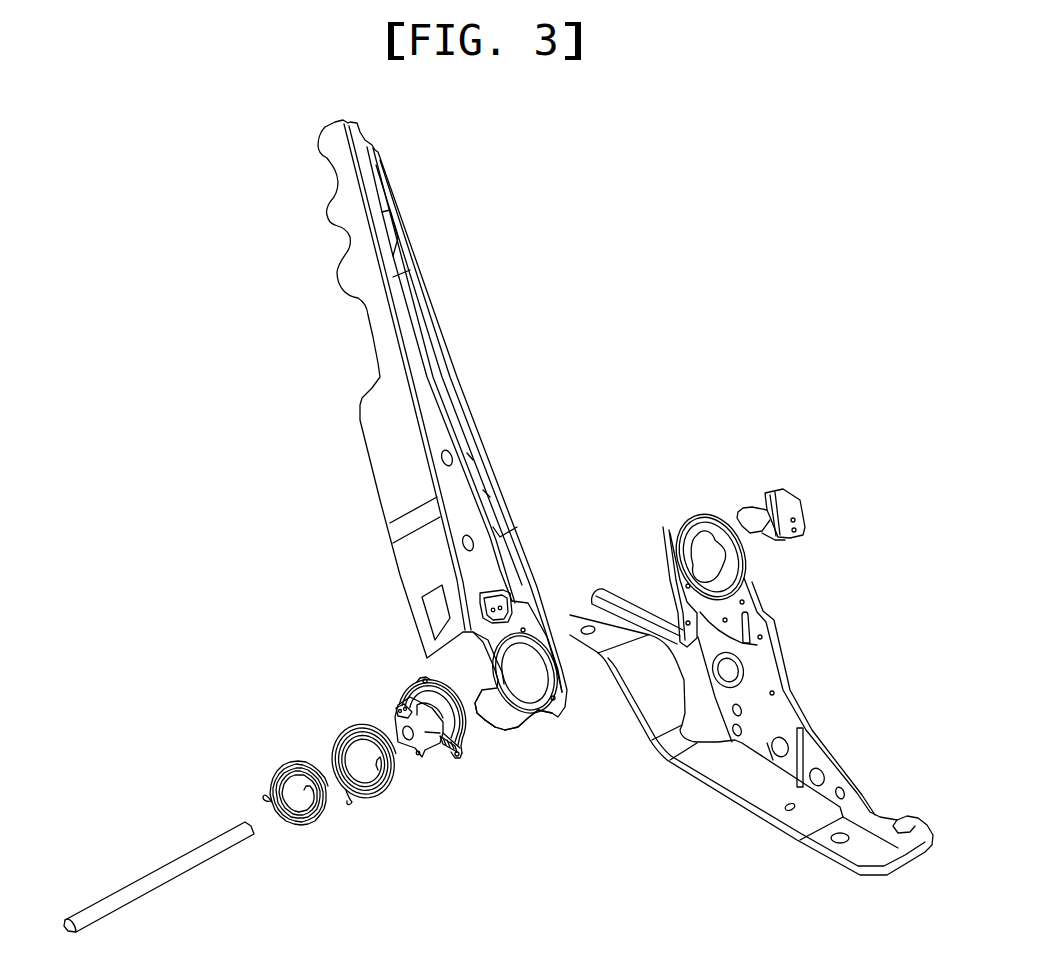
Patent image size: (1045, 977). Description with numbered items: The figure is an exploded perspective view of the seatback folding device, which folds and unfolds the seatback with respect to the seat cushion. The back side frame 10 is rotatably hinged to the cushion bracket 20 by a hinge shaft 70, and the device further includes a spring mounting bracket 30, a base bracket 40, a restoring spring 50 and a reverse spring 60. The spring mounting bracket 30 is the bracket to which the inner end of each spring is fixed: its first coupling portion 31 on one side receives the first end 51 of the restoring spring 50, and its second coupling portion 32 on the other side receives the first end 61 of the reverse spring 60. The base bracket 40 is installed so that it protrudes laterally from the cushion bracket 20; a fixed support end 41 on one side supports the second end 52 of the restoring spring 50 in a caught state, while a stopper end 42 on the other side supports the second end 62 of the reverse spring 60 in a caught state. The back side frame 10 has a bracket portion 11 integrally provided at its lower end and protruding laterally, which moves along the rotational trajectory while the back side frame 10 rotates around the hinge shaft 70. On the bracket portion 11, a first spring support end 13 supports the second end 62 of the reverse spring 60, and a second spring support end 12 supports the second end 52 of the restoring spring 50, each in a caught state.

The back side frame 10 is at (455, 365).
The bracket portion 11 is at (497, 714).
The second spring support end 12 is at (478, 704).
The first spring support end 13 is at (513, 713).
The cushion bracket 20 is at (757, 817).
The spring mounting bracket 30 is at (403, 680).
The first coupling portion 31 is at (405, 708).
The second coupling portion 32 is at (457, 748).
The base bracket 40 is at (764, 492).
The fixed support end 41 is at (752, 507).
The stopper end 42 is at (762, 533).
The restoring spring 50 is at (288, 820).
The first end 51 is at (290, 772).
The second end 52 is at (263, 795).
The reverse spring 60 is at (377, 807).
The first end 61 is at (377, 793).
The second end 62 is at (350, 801).
The hinge shaft 70 is at (127, 893).